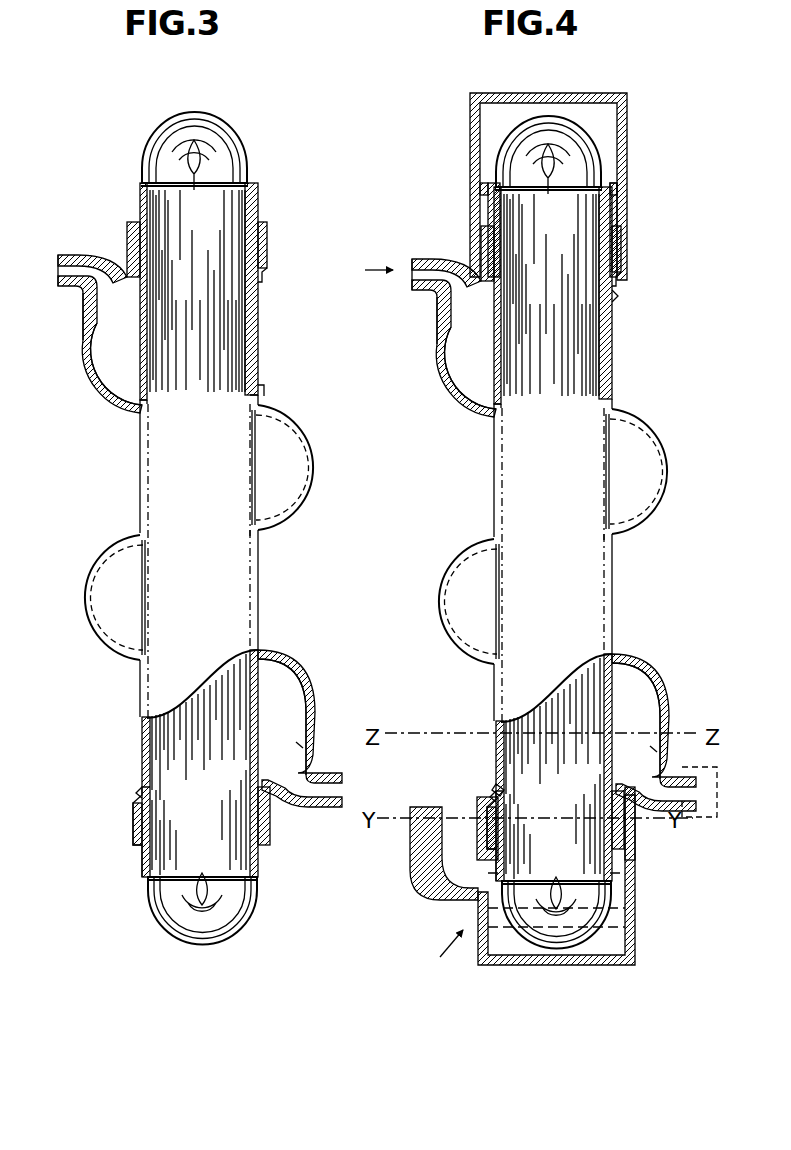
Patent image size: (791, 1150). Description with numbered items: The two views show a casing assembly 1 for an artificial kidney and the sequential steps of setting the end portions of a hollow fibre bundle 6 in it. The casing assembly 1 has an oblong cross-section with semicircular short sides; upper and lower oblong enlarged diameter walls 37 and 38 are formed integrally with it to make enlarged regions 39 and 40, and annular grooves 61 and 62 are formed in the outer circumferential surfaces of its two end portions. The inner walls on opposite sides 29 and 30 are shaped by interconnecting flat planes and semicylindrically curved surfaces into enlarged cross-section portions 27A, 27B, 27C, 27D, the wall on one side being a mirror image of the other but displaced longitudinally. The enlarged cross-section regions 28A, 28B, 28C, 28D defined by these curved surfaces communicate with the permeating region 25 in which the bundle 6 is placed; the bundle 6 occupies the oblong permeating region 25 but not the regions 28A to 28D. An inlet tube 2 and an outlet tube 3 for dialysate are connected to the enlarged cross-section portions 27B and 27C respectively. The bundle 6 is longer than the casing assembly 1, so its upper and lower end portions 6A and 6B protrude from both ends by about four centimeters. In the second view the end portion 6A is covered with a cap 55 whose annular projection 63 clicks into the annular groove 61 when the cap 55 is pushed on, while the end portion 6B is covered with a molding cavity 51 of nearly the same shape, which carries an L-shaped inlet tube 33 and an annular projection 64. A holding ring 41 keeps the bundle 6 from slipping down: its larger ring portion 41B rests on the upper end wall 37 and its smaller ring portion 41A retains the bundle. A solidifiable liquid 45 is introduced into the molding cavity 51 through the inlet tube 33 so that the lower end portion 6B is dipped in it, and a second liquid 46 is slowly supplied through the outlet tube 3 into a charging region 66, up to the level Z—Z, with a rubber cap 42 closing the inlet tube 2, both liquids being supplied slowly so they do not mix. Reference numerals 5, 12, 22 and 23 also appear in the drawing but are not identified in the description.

In FIG. 3, the casing assembly 1 is at (262, 604).
In FIG. 4, the casing assembly 1 is at (618, 586).
In FIG. 3, the inlet tube 2 is at (343, 790).
In FIG. 4, the inlet tube 2 is at (664, 814).
In FIG. 3, the outlet tube 3 is at (68, 258).
In FIG. 4, the outlet tube 3 is at (424, 258).
In FIG. 3, the filter element 5 is at (243, 310).
In FIG. 4, the filter element 5 is at (602, 333).
In FIG. 3, the bundle 6 is at (258, 202).
In FIG. 4, the bundle 6 is at (612, 355).
In FIG. 3, the upper end portion 6A is at (217, 128).
In FIG. 4, the upper end portion 6A is at (543, 118).
In FIG. 3, the lower end portion 6B is at (198, 935).
In FIG. 4, the lower end portion 6B is at (555, 935).
In FIG. 3, the end cap rim 12 is at (236, 172).
In FIG. 4, the end cap rim 12 is at (603, 182).
In FIG. 3, the outlet chamber wall 22 is at (303, 750).
In FIG. 4, the outlet chamber wall 22 is at (662, 740).
In FIG. 3, the inlet elbow 23 is at (86, 328).
In FIG. 4, the inlet elbow 23 is at (440, 328).
In FIG. 3, the permeating region 25 is at (262, 392).
In FIG. 3, the enlarged cross-section portion 27A is at (302, 444).
In FIG. 4, the enlarged cross-section portion 27A is at (633, 418).
In FIG. 3, the enlarged cross-section portion 27B is at (300, 670).
In FIG. 4, the enlarged cross-section portion 27B is at (635, 672).
In FIG. 3, the enlarged cross-section portion 27C is at (104, 398).
In FIG. 4, the enlarged cross-section portion 27C is at (468, 402).
In FIG. 3, the enlarged cross-section portion 27D is at (108, 550).
In FIG. 4, the enlarged cross-section portion 27D is at (450, 565).
In FIG. 3, the enlarged cross-section region 28A is at (306, 470).
In FIG. 4, the enlarged cross-section region 28A is at (638, 535).
In FIG. 3, the enlarged cross-section region 28B is at (303, 690).
In FIG. 4, the enlarged cross-section region 28B is at (648, 690).
In FIG. 3, the enlarged cross-section region 28C is at (98, 368).
In FIG. 4, the enlarged cross-section region 28C is at (455, 382).
In FIG. 3, the enlarged cross-section region 28D is at (102, 648).
In FIG. 4, the enlarged cross-section region 28D is at (455, 604).
In FIG. 3, the opposite side 29 is at (263, 556).
In FIG. 4, the opposite side 29 is at (618, 624).
In FIG. 3, the opposite side 30 is at (138, 470).
In FIG. 4, the opposite side 30 is at (492, 477).
In FIG. 4, the L-shaped inlet tube 33 is at (412, 872).
In FIG. 3, the upper enlarged diameter wall 37 is at (130, 236).
In FIG. 4, the upper enlarged diameter wall 37 is at (483, 243).
In FIG. 3, the lower enlarged diameter wall 38 is at (272, 830).
In FIG. 4, the lower enlarged diameter wall 38 is at (630, 865).
In FIG. 3, the enlarged region 39 is at (268, 238).
In FIG. 4, the enlarged region 39 is at (622, 252).
In FIG. 3, the enlarged region 40 is at (134, 832).
In FIG. 4, the enlarged region 40 is at (500, 836).
In FIG. 4, the holding ring 41 is at (620, 230).
In FIG. 4, the smaller ring portion 41A is at (618, 197).
In FIG. 4, the larger ring portion 41B is at (473, 205).
In FIG. 4, the rubber cap 42 is at (697, 776).
In FIG. 4, the solidifiable liquid 45 is at (597, 945).
In FIG. 4, the second liquid 46 is at (377, 253).
In FIG. 4, the molding cavity 51 is at (444, 957).
In FIG. 4, the cap 55 is at (628, 112).
In FIG. 3, the annular groove 61 is at (262, 275).
In FIG. 4, the annular groove 61 is at (625, 274).
In FIG. 3, the annular groove 62 is at (133, 796).
In FIG. 4, the annular groove 62 is at (487, 797).
In FIG. 4, the annular projection 63 is at (620, 294).
In FIG. 4, the annular projection 64 is at (632, 835).
In FIG. 4, the charging region 66 is at (496, 786).